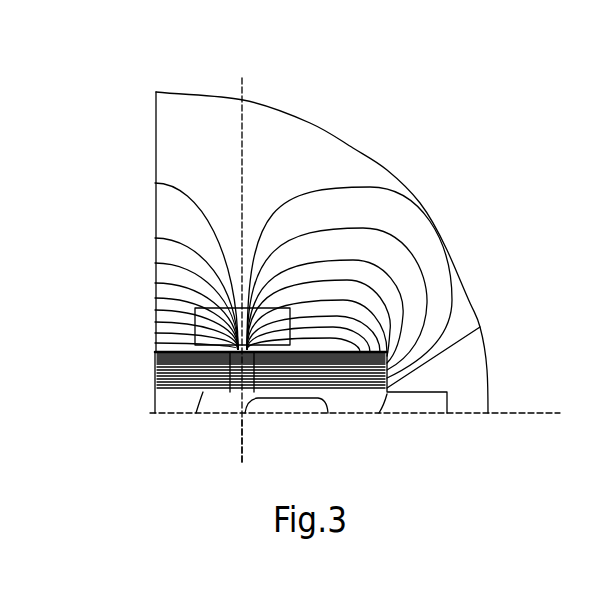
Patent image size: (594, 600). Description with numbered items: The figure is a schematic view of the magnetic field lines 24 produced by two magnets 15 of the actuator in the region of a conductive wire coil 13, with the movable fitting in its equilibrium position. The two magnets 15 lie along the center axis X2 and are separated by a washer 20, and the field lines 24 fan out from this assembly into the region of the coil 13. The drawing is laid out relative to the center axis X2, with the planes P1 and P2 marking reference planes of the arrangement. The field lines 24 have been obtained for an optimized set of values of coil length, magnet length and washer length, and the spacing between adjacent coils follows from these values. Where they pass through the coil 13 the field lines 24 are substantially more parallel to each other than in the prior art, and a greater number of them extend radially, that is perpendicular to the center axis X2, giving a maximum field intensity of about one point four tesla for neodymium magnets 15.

The coil 13 is at (159, 312).
The magnet 15 is at (200, 395).
The washer 20 is at (237, 395).
The magnetic field lines 24 is at (369, 187).
The first plane / axis P1 is at (243, 80).
The second plane / axis P2 is at (244, 445).
The center axis X2 is at (355, 400).